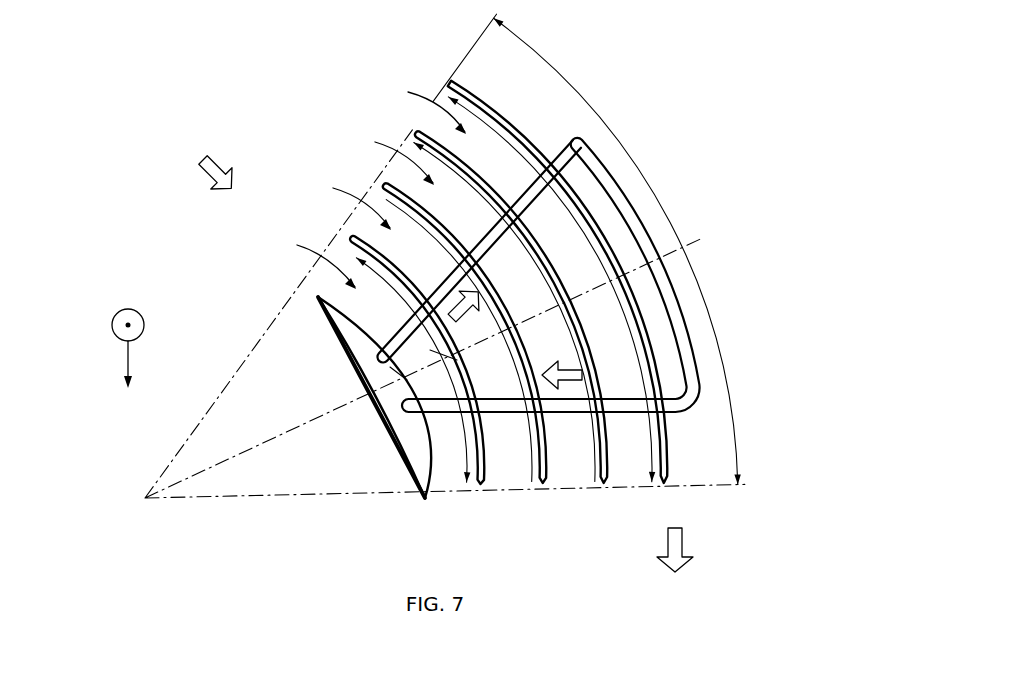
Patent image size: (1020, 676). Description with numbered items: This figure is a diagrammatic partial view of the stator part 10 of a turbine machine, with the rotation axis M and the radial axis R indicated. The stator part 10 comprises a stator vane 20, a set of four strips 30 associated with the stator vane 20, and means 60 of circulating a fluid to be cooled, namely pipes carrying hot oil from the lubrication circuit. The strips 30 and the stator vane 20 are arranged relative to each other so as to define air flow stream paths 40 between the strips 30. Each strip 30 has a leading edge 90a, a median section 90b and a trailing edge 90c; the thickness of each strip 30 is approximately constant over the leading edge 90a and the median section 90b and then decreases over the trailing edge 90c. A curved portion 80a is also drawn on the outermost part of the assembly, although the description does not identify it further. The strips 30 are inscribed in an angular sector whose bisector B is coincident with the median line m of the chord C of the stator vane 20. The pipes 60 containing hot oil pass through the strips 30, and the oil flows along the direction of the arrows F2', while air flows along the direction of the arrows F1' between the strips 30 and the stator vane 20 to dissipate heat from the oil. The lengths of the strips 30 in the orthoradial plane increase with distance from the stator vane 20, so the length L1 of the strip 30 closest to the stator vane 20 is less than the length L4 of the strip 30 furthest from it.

The stator part 10 is at (313, 108).
The stator vane 20 is at (367, 342).
The strips 30 is at (497, 113).
The air flow stream paths 40 is at (367, 183).
The means of circulating a fluid to be cooled 60 is at (689, 360).
The arc-shaped channel portion 80a is at (613, 193).
The leading edge 90a is at (417, 133).
The median section 90b is at (584, 292).
The trailing edge 90c is at (600, 470).
The arrows F1' is at (480, 348).
The arrows F2' is at (515, 340).
The length L1 is at (423, 371).
The length L4 is at (571, 245).
The chord C is at (383, 430).
The bisector B is at (699, 236).
The median line m is at (628, 271).
The radial axis R is at (128, 334).
The rotation axis M is at (126, 402).